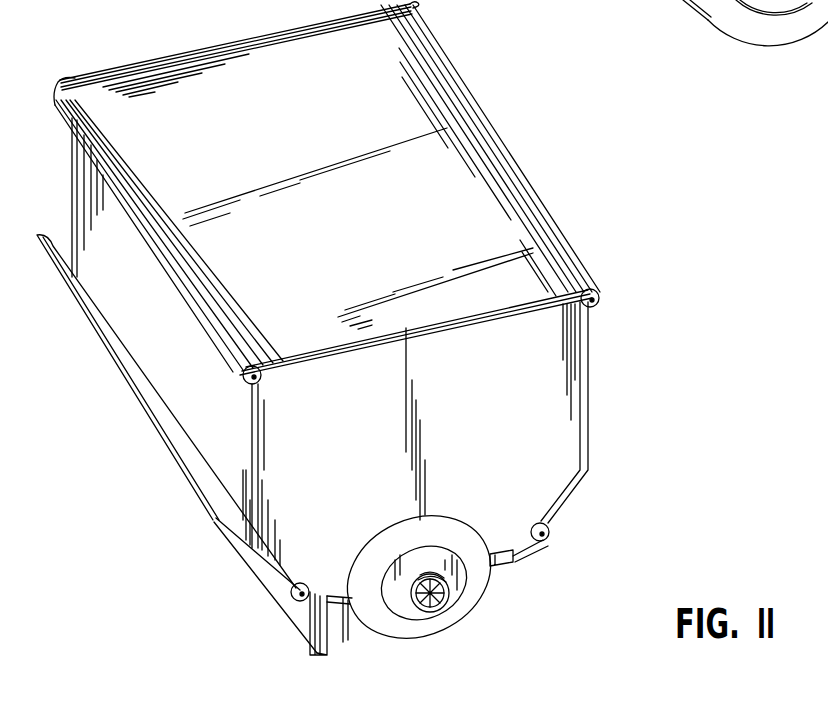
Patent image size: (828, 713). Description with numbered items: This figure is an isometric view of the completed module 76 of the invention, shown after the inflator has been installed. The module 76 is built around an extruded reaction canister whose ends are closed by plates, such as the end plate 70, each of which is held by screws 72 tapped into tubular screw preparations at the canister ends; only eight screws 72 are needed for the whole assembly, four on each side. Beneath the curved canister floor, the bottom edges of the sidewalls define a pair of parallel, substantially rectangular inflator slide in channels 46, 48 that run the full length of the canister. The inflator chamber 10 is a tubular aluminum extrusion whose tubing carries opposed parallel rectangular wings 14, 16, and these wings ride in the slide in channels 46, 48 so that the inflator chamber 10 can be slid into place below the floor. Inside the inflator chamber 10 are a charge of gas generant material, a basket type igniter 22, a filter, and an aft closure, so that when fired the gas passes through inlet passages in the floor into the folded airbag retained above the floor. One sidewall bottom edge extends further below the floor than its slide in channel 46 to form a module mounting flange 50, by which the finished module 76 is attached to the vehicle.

The inflator chamber 10 is at (470, 597).
The wing 14 is at (343, 606).
The wing 16 is at (497, 567).
The basket type igniter 22 is at (393, 606).
The inflator slide in channel 46 is at (336, 606).
The inflator slide in channel 48 is at (510, 570).
The module mounting flange 50 is at (308, 608).
The end plate 70 is at (568, 395).
The screw 72 is at (246, 378).
The module 76 is at (518, 140).